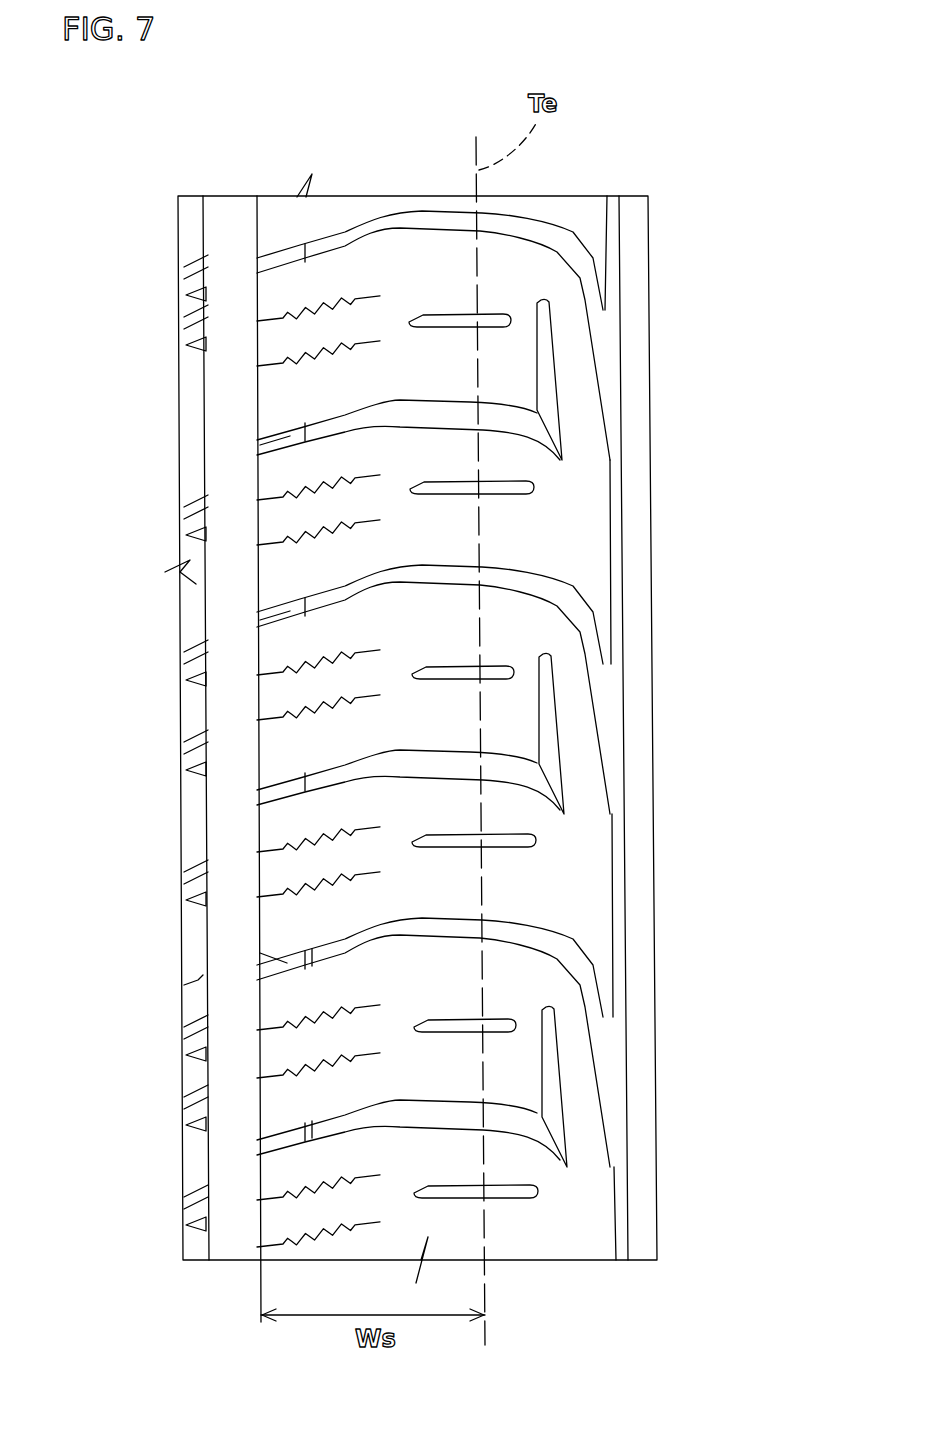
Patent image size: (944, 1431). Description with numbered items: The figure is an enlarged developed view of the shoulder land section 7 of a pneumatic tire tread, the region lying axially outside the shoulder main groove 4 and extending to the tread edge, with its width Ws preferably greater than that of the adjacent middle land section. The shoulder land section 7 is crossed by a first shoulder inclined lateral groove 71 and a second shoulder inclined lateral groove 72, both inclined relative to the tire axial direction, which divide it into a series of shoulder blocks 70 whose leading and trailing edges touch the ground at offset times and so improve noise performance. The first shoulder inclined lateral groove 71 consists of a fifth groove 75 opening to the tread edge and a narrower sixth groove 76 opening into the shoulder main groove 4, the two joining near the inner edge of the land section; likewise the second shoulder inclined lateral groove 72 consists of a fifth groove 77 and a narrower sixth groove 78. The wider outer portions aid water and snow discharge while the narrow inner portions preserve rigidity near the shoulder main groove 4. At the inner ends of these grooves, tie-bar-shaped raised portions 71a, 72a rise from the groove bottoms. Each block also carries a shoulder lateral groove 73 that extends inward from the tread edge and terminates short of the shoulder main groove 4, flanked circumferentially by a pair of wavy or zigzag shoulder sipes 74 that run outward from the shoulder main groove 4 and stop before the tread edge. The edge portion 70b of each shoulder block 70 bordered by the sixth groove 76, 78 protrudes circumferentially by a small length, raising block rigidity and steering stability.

The shoulder main groove 4 is at (232, 252).
The shoulder land section 7 is at (372, 277).
The shoulder block 70 is at (450, 366).
The edge portion 70b is at (300, 948).
The first shoulder inclined lateral groove 71 is at (455, 578).
The raised portion 71a is at (275, 615).
The second shoulder inclined lateral groove 72 is at (460, 415).
The raised portion 72a is at (275, 440).
The shoulder lateral groove 73 is at (465, 486).
The shoulder sipe 74 is at (305, 656).
The fifth groove 75 is at (410, 930).
The sixth groove 76 is at (288, 964).
The fifth groove 77 is at (413, 1115).
The sixth groove 78 is at (290, 1145).